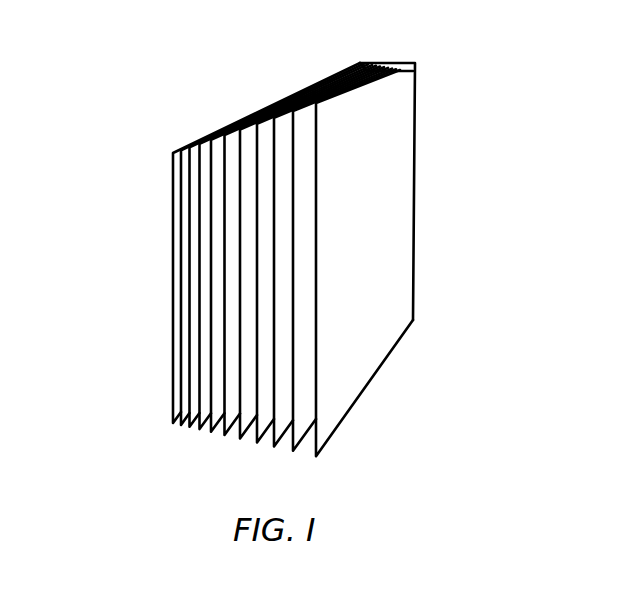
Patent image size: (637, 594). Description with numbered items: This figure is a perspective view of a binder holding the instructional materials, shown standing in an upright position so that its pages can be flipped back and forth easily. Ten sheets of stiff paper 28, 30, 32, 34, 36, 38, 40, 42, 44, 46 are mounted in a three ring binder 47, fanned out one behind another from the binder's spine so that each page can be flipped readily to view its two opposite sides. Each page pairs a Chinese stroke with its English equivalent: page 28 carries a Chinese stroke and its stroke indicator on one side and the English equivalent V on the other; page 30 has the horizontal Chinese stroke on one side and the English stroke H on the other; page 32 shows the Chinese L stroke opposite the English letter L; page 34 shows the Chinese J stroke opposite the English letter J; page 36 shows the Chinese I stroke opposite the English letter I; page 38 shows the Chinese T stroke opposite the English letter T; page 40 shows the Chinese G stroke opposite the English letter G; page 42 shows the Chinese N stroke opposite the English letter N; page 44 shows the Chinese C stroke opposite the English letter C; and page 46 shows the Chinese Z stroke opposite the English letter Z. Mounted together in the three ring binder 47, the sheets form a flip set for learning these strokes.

The three ring binder 47 is at (415, 54).
The page 28 is at (310, 93).
The page 30 is at (283, 107).
The page 32 is at (273, 122).
The page 34 is at (260, 137).
The page 36 is at (228, 170).
The page 38 is at (243, 218).
The page 40 is at (256, 237).
The page 42 is at (258, 240).
The page 44 is at (272, 275).
The page 46 is at (292, 294).